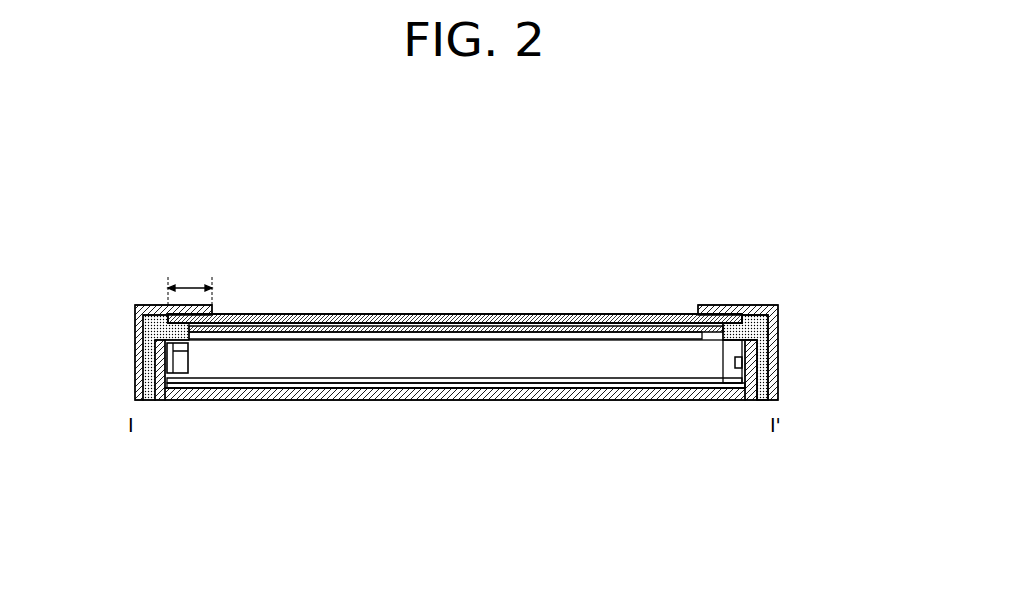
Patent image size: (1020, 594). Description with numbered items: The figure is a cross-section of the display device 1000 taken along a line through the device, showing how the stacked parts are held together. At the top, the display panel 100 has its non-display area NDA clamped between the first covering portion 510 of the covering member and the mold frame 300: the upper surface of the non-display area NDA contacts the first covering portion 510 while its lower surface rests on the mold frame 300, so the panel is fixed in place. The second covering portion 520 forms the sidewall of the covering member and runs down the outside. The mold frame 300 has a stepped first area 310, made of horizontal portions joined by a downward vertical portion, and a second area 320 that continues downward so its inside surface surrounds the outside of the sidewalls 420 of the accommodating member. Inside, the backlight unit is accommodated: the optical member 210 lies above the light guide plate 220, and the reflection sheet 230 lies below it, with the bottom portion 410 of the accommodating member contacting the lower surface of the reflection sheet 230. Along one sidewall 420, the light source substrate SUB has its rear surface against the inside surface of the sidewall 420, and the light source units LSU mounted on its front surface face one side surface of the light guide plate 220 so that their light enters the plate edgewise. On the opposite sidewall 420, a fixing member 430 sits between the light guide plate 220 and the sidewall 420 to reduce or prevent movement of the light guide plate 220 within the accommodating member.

The display device 1000 is at (216, 188).
The display panel 100 is at (303, 313).
The optical member 210 is at (360, 326).
The mold frame 300 is at (863, 293).
The first area 310 is at (752, 323).
The second area 320 is at (765, 343).
The first covering portion 510 is at (152, 308).
The second covering portion 520 is at (155, 335).
The light guide plate 220 is at (190, 351).
The reflection sheet 230 is at (175, 386).
The fixing member 430 is at (178, 368).
The bottom portion 410 is at (655, 398).
The sidewall 420 is at (778, 400).
The light source unit LSU is at (737, 363).
The light source substrate SUB is at (755, 387).
The non-display area NDA is at (190, 283).